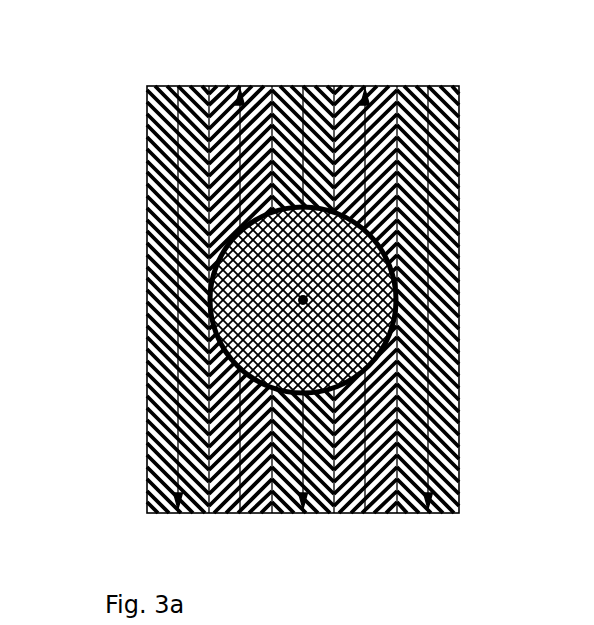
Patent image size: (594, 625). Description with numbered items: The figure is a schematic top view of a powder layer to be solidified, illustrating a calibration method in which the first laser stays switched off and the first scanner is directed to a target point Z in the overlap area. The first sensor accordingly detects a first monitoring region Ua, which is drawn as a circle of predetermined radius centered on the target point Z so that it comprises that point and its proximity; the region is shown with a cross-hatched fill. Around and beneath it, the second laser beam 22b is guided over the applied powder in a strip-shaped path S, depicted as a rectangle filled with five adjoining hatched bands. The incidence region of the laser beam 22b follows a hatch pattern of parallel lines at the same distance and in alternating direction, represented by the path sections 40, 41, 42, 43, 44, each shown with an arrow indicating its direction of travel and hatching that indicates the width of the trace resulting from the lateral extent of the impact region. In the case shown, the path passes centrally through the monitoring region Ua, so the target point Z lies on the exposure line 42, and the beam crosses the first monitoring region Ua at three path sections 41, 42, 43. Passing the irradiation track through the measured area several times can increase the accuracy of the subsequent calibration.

The path section 40 is at (178, 286).
The path section 41 is at (240, 286).
The exposure line 42 is at (303, 286).
The path section 43 is at (365, 286).
The path section 44 is at (428, 286).
The second laser beam 22b is at (327, 453).
The first monitoring region Ua is at (337, 310).
The target point Z is at (312, 301).
The strip-shaped path S is at (122, 268).